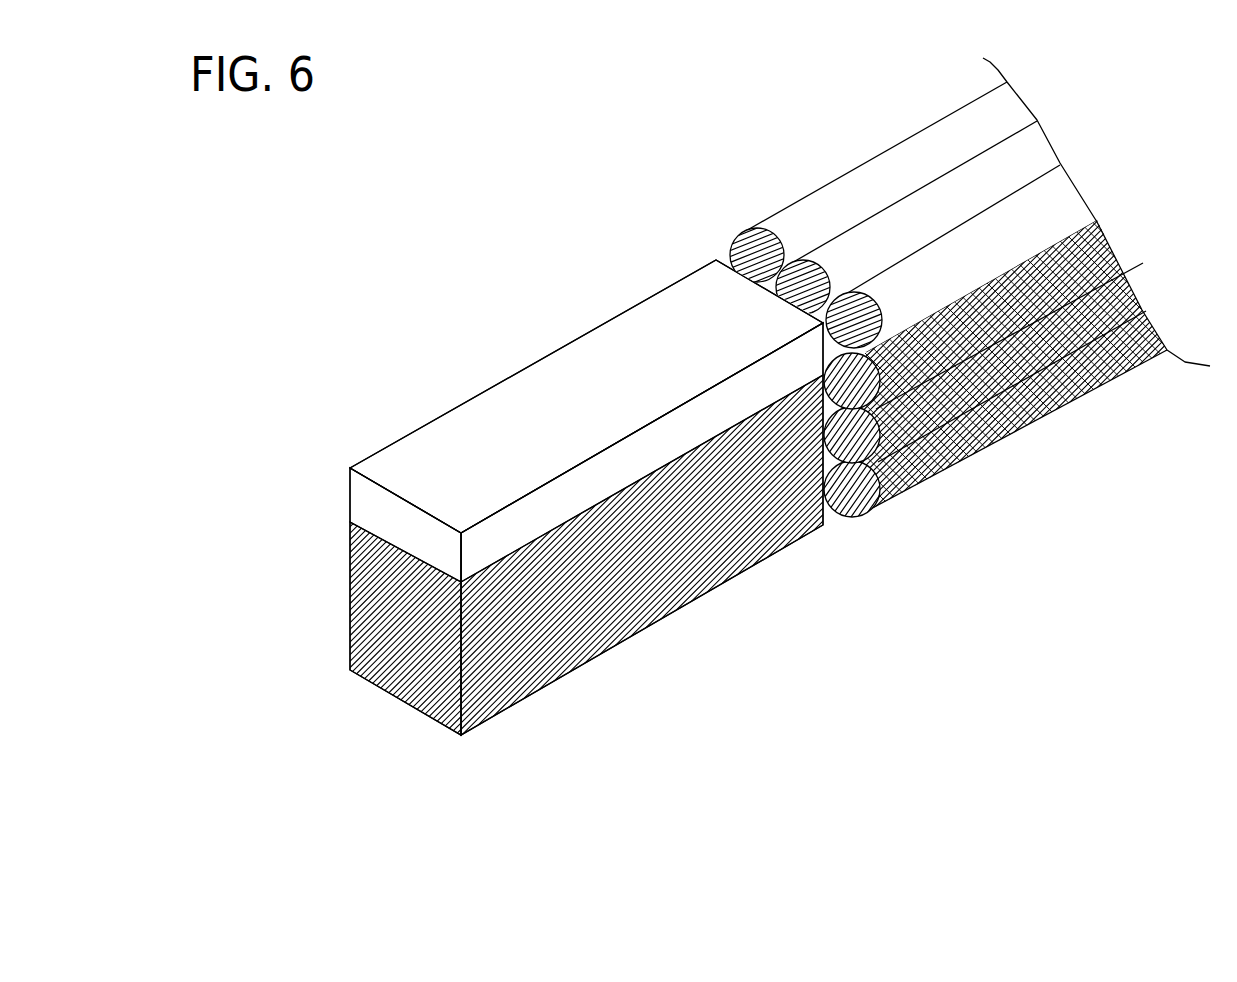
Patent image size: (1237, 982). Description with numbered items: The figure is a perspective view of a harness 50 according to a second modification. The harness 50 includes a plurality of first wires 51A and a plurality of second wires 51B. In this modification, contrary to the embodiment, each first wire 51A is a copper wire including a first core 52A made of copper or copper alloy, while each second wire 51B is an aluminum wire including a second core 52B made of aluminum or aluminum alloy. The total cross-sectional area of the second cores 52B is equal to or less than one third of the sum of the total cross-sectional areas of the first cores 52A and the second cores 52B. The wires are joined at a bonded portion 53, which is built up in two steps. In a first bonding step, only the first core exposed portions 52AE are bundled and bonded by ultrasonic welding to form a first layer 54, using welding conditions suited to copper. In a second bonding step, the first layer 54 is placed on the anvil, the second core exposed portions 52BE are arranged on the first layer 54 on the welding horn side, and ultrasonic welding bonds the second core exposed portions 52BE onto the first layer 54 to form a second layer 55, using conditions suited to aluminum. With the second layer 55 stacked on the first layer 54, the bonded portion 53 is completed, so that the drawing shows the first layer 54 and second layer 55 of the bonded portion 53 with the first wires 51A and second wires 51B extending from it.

The harness 50 is at (533, 172).
The first wire 51A is at (1031, 453).
The second wire 51B is at (849, 150).
The first core 52A is at (849, 536).
The first core exposed portion 52AE is at (840, 528).
The second core 52B is at (718, 235).
The second core exposed portion 52BE is at (728, 254).
The bonded portion 53 is at (618, 491).
The first layer 54 is at (362, 580).
The second layer 55 is at (554, 421).